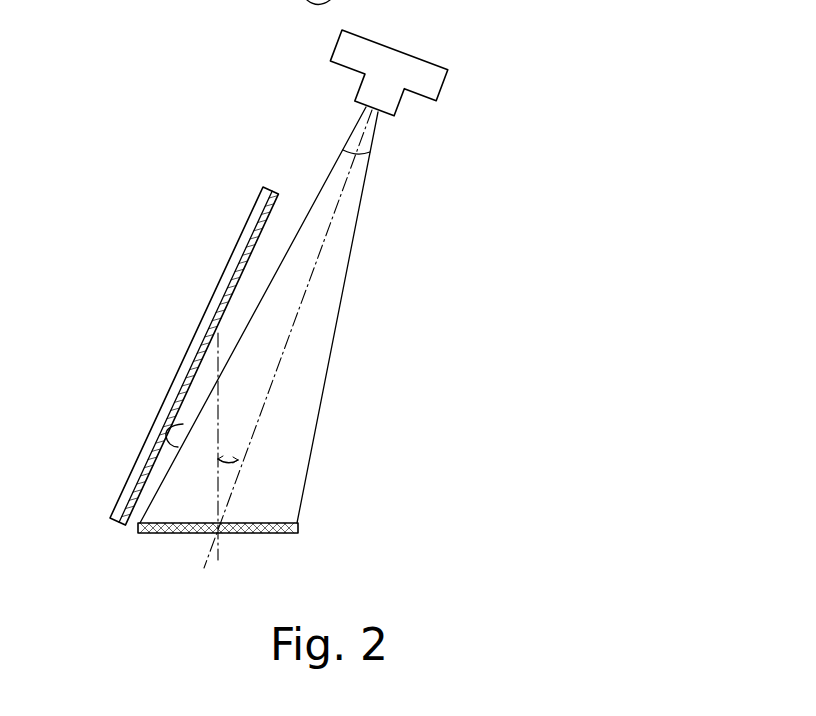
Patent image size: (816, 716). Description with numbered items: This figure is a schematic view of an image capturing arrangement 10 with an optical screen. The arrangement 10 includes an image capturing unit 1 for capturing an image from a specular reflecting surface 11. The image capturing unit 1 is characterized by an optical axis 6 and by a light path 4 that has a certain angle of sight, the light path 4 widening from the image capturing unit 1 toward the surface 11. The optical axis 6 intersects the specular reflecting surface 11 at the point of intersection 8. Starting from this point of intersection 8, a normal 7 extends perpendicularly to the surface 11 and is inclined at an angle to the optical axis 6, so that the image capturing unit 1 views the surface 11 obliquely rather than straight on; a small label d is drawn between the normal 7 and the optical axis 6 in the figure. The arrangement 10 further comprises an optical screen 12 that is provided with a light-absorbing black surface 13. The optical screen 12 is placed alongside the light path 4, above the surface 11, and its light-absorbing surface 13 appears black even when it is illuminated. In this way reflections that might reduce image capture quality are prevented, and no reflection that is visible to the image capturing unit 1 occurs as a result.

The image capturing unit 1 is at (428, 62).
The light path 4 is at (348, 268).
The optical axis 6 is at (288, 338).
The normal 7 is at (217, 410).
The point of intersection 8 is at (237, 525).
The arrangement 10 is at (533, 110).
The specular reflecting surface 11 is at (187, 533).
The optical screen 12 is at (235, 247).
The light-absorbing black surface 13 is at (157, 440).
The tilt angle / distance d is at (227, 472).